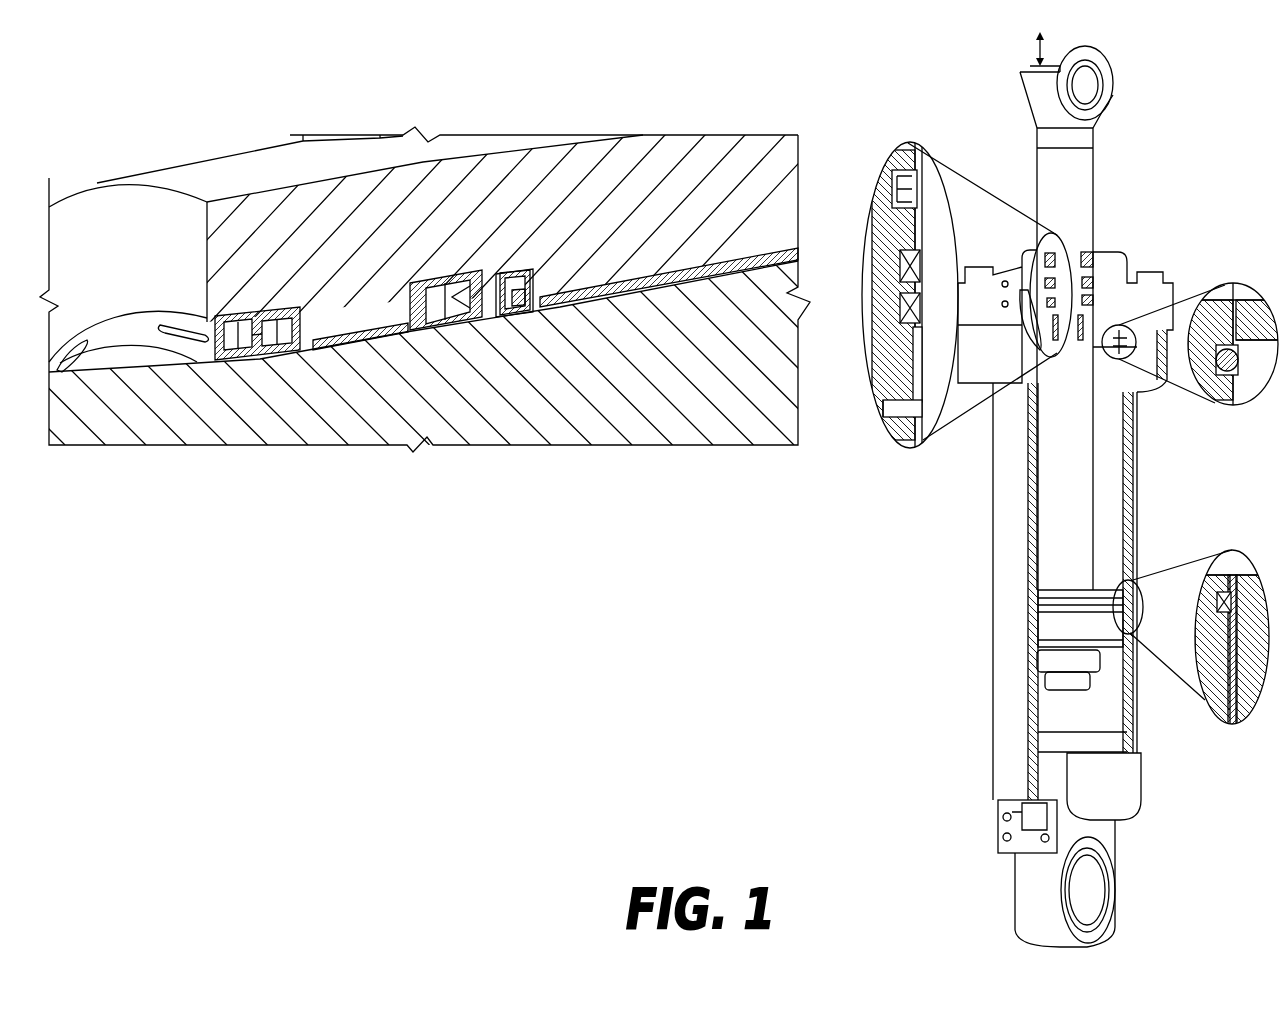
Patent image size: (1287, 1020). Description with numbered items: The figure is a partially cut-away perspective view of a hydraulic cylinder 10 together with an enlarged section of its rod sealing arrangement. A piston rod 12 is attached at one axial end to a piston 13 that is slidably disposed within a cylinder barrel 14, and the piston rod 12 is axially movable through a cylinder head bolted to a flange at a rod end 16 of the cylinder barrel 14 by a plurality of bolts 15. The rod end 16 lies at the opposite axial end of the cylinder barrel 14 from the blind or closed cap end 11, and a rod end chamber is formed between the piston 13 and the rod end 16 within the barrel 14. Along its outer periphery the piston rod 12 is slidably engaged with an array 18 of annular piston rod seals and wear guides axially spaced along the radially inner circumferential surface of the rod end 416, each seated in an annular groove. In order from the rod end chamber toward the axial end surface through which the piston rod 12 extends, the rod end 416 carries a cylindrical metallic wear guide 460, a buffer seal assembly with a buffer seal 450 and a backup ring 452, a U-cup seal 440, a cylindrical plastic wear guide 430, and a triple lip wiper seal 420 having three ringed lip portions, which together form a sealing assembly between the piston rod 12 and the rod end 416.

The hydraulic cylinder 10 is at (1012, 52).
The cap end 11 is at (1112, 880).
The piston rod 12 is at (647, 410).
The piston 13 is at (1067, 628).
The cylinder barrel 14 is at (993, 718).
The bolts 15 is at (1160, 270).
The rod end 16 is at (998, 360).
The array of annular piston rod seals and wear guides 18 is at (908, 135).
The rod end 416 is at (456, 212).
The triple lip wiper seal 420 is at (236, 300).
The cylindrical plastic wear guide 430 is at (340, 340).
The U-cup seal 440 is at (437, 340).
The buffer seal 450 is at (505, 320).
The backup ring 452 is at (505, 322).
The cylindrical metallic wear guide 460 is at (641, 282).